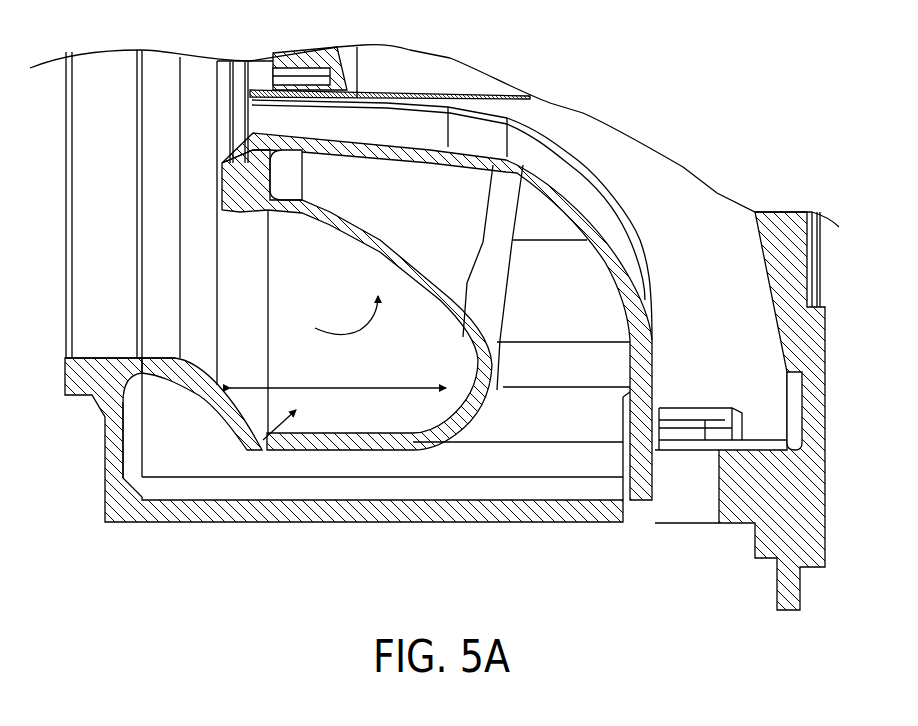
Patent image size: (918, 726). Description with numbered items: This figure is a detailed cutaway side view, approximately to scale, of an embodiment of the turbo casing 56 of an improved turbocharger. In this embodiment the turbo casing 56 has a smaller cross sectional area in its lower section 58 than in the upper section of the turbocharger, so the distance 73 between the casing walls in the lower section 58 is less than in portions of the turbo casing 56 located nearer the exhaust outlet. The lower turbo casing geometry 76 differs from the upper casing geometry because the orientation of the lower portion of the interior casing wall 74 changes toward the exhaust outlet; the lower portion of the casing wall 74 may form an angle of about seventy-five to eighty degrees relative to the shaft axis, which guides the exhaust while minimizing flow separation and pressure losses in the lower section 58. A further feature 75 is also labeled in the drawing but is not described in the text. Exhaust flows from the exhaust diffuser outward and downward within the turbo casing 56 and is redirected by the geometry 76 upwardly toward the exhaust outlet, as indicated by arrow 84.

The turbo casing 56 is at (427, 443).
The lower section 58 is at (262, 448).
The first axial cavity distance 73 is at (420, 388).
The interior casing wall 74 is at (567, 203).
The groove 75 is at (193, 392).
The lower turbo casing geometry 76 is at (490, 294).
The arrow 84 is at (365, 338).